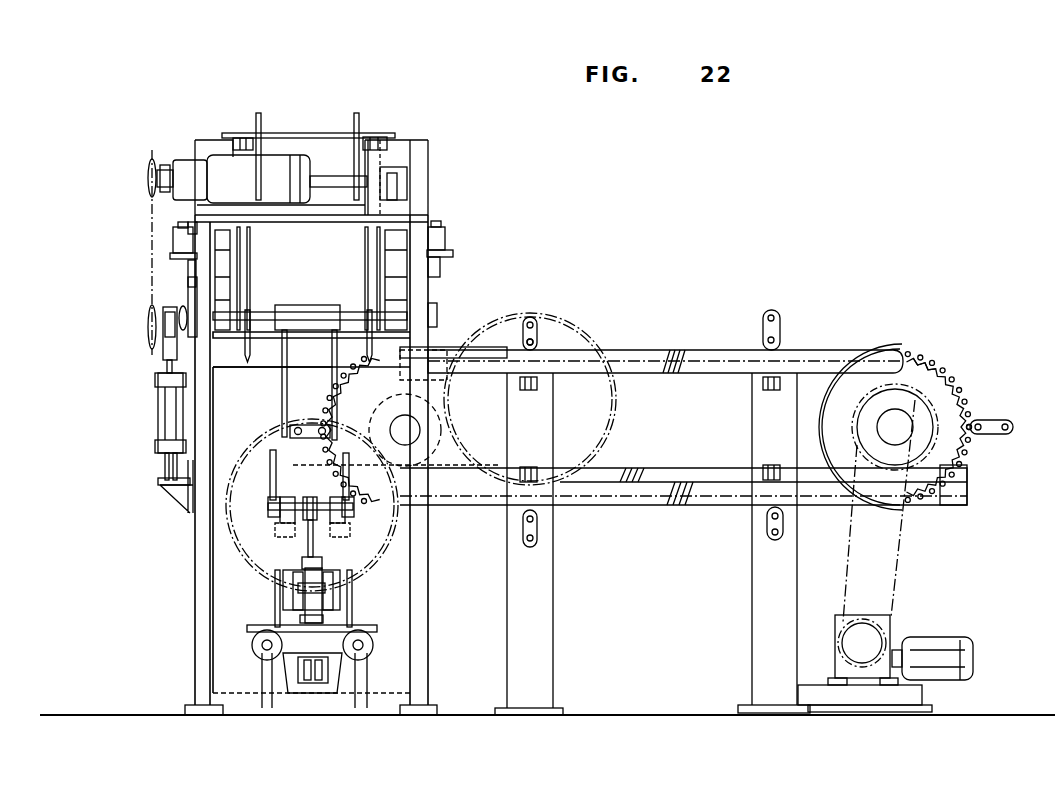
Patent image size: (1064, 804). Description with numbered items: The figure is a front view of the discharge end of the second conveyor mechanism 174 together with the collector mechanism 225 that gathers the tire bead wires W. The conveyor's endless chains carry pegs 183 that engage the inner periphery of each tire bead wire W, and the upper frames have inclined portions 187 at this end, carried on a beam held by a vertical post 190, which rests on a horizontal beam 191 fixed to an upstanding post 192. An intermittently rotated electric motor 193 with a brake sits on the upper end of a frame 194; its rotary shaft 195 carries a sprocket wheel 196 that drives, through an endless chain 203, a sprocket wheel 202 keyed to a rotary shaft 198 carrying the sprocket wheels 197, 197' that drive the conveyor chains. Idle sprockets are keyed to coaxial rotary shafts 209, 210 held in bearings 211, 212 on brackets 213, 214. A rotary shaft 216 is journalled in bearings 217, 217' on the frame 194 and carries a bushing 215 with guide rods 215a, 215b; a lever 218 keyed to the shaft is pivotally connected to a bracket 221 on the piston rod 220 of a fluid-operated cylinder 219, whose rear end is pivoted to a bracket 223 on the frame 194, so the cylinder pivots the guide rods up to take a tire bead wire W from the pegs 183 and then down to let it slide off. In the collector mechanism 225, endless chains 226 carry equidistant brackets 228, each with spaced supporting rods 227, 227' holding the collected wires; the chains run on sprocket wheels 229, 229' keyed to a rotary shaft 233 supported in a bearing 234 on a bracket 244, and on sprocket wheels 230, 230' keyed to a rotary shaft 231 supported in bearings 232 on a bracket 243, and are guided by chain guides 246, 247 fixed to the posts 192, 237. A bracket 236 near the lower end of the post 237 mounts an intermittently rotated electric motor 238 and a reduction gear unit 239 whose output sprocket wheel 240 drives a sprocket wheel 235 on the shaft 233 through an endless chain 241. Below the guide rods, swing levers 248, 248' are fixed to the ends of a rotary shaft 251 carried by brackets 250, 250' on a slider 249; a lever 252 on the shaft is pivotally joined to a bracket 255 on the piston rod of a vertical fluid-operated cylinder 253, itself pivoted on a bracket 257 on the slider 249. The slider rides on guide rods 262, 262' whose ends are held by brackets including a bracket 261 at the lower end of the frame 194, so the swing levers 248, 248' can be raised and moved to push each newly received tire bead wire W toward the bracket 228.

The second conveyor mechanism 174 is at (324, 126).
The pegs 183 is at (280, 106).
The inclined portions 187 is at (243, 140).
The vertical post 190 is at (420, 170).
The horizontal beam 191 is at (444, 343).
The upstanding post 192 is at (553, 640).
The electric motor 193 is at (183, 162).
The frame 194 is at (202, 672).
The rotary shaft 195 is at (167, 168).
The sprocket wheel 196 is at (148, 165).
The sprocket wheel 197 is at (256, 278).
The sprocket wheel 197' is at (360, 278).
The rotary shaft 198 is at (318, 300).
The sprocket wheel 202 is at (148, 325).
The endless chain 203 is at (142, 200).
The rotary shaft 209 is at (434, 223).
The rotary shaft 210 is at (195, 227).
The bearing 211 is at (450, 233).
The bearing 212 is at (175, 235).
The bracket 213 is at (435, 270).
The bracket 214 is at (190, 273).
The bushing 215 is at (300, 362).
The guide rod 215a is at (273, 393).
The guide rod 215b is at (360, 372).
The rotary shaft 216 is at (277, 390).
The bearing 217 is at (140, 299).
The bearing 217' is at (466, 303).
The lever 218 is at (180, 318).
The fluid-operated cylinder 219 is at (160, 408).
The piston rod 220 is at (167, 367).
The bracket 221 is at (163, 353).
The bracket 223 is at (172, 498).
The collector mechanism 225 is at (613, 340).
The endless chain 226 is at (937, 418).
The supporting rod 227 is at (800, 307).
The supporting rod 227' is at (803, 336).
The bracket 228 is at (763, 333).
The sprocket wheel 229 is at (938, 413).
The sprocket wheel 229' is at (997, 377).
The sprocket wheel 230 is at (516, 368).
The sprocket wheel 230' is at (571, 378).
The rotary shaft 231 is at (330, 425).
The bearing 232 is at (470, 420).
The rotary shaft 233 is at (905, 427).
The bearing 234 is at (936, 378).
The sprocket wheel 235 is at (903, 352).
The bracket 236 is at (853, 700).
The post 237 is at (760, 645).
The electric motor 238 is at (940, 645).
The reduction gear unit 239 is at (862, 615).
The sprocket wheel 240 is at (830, 647).
The endless chain 241 is at (913, 540).
The bracket 243 is at (345, 512).
The bracket 244 is at (967, 490).
The chain guide 246 is at (653, 353).
The chain guide 247 is at (648, 505).
The swing lever 248 is at (299, 471).
The swing lever 248' is at (413, 505).
The slider 249 is at (345, 560).
The bracket 250 is at (210, 521).
The bracket 250' is at (412, 538).
The rotary shaft 251 is at (280, 503).
The lever 252 is at (308, 497).
The fluid-operated cylinder 253 is at (283, 583).
The bracket 255 is at (308, 540).
The bracket 257 is at (327, 610).
The bracket 261 is at (257, 675).
The guide rod 262 is at (260, 666).
The guide rod 262' is at (414, 668).
The tire bead wire W is at (310, 130).